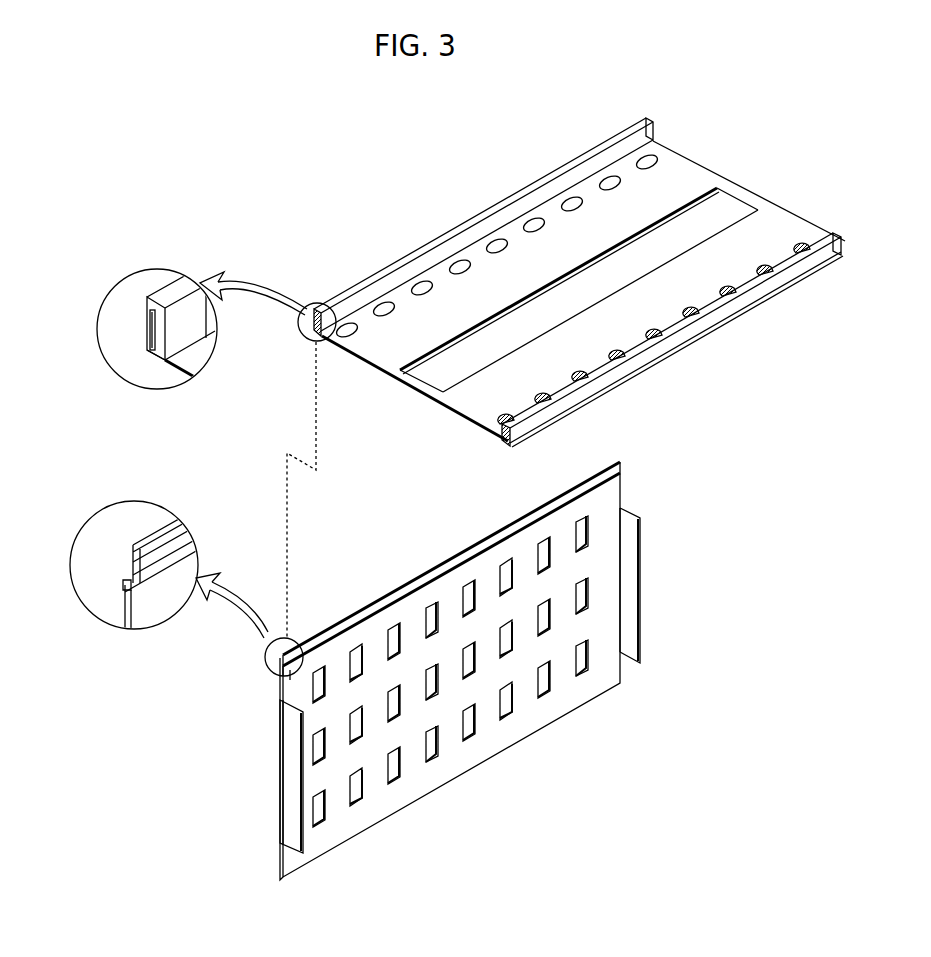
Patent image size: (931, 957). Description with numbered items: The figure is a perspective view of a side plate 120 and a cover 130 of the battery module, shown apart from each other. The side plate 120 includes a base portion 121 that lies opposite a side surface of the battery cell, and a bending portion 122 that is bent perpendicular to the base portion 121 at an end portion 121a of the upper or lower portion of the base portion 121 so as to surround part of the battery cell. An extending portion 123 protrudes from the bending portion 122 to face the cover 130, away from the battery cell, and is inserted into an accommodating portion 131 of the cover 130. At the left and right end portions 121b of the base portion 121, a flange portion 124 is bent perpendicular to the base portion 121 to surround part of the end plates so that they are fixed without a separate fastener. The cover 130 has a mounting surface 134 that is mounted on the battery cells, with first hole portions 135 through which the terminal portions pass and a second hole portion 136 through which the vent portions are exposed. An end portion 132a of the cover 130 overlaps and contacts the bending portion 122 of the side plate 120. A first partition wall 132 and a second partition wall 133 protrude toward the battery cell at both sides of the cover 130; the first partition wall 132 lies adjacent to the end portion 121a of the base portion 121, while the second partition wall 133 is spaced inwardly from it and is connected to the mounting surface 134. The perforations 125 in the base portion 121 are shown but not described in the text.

The side plate 120 is at (410, 548).
The base portion 121 is at (288, 684).
The end portion 121a is at (360, 616).
The left and right end portions 121b is at (630, 585).
The bending portion 122 is at (333, 622).
The extending portion 123 is at (450, 560).
The flange portion 124 is at (633, 517).
The vent holes 125 is at (515, 578).
The cover 130 is at (468, 205).
The accommodating portion 131 is at (303, 337).
The first partition wall 132 is at (300, 320).
The end portion 132a is at (150, 348).
The second partition wall 133 is at (352, 298).
The mounting surface 134 is at (688, 182).
The first hole portions 135 is at (574, 198).
The second hole portion 136 is at (708, 212).